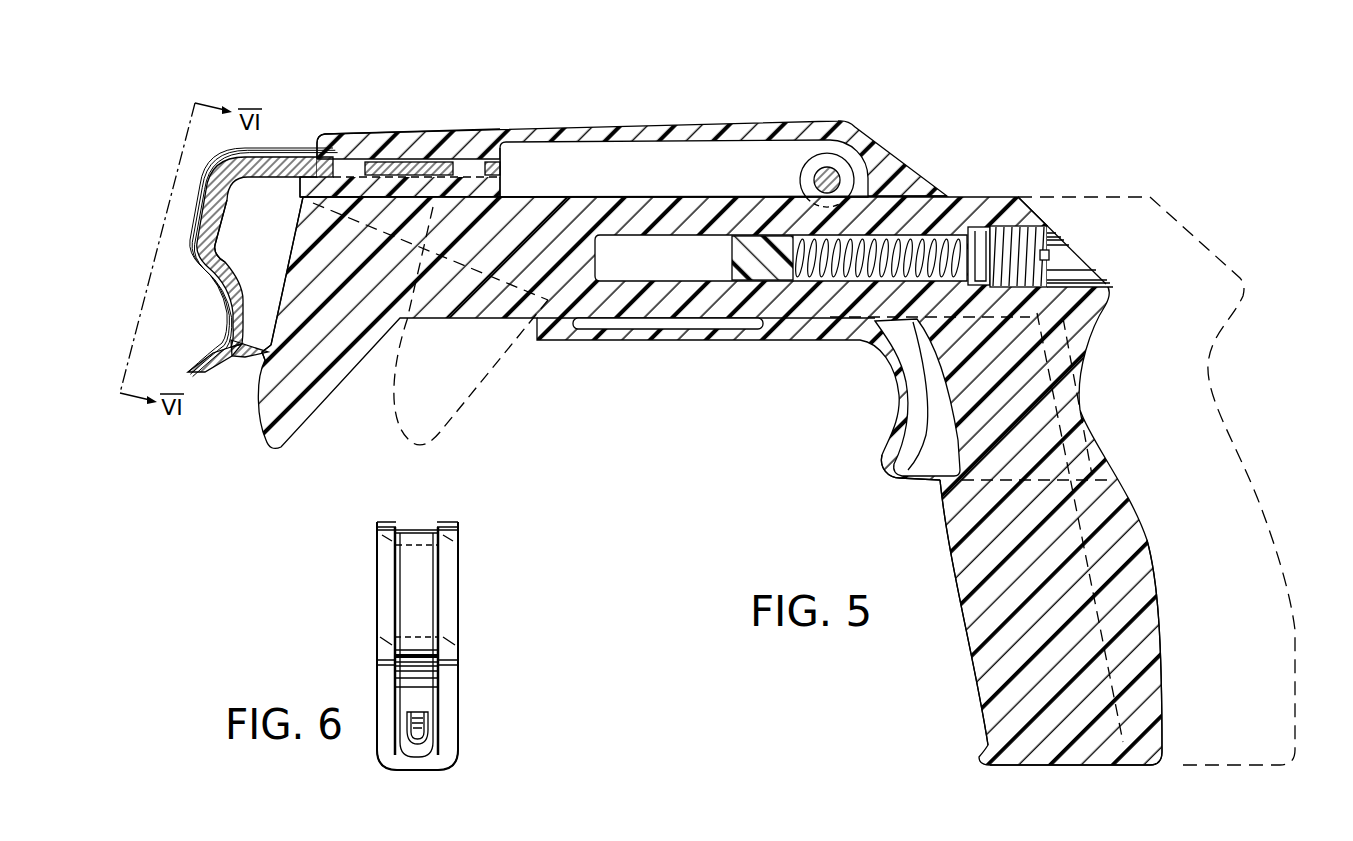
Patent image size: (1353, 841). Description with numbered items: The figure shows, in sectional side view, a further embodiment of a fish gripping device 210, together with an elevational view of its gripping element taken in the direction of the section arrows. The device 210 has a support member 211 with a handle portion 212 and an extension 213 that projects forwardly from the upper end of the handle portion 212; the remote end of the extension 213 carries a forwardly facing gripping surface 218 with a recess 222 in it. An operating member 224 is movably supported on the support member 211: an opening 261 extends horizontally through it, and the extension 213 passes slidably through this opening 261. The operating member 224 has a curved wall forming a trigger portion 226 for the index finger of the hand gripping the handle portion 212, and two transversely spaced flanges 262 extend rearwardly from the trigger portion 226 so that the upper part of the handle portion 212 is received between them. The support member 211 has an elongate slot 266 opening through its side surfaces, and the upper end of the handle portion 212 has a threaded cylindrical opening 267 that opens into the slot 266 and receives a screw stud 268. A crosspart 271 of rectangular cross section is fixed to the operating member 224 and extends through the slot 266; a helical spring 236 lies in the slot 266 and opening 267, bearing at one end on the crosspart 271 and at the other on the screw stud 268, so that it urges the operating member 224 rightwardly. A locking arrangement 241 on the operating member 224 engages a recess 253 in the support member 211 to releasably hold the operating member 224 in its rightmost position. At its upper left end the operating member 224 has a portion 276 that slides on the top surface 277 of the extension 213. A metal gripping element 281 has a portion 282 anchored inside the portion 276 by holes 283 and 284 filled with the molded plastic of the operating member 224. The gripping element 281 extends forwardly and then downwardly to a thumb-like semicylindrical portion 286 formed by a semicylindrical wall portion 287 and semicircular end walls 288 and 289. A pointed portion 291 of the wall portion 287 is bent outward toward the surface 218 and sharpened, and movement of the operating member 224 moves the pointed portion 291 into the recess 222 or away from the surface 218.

In FIG. 5, the fish gripping device 210 is at (648, 355).
In FIG. 5, the support member 211 is at (938, 525).
In FIG. 5, the handle portion 212 is at (993, 653).
In FIG. 5, the extension 213 is at (440, 300).
In FIG. 5, the gripping surface 218 is at (292, 237).
In FIG. 5, the recess 222 is at (258, 365).
In FIG. 5, the operating member 224 is at (592, 128).
In FIG. 5, the trigger portion 226 is at (900, 432).
In FIG. 5, the helical spring 236 is at (847, 262).
In FIG. 5, the locking arrangement 241 is at (815, 155).
In FIG. 5, the recess 253 is at (802, 186).
In FIG. 5, the opening 261 is at (537, 304).
In FIG. 5, the flanges 262 is at (930, 413).
In FIG. 5, the elongate slot 266 is at (636, 274).
In FIG. 5, the threaded cylindrical opening 267 is at (975, 228).
In FIG. 5, the screw stud 268 is at (1025, 228).
In FIG. 5, the crosspart 271 is at (770, 272).
In FIG. 5, the portion 276 is at (390, 134).
In FIG. 5, the top surface 277 is at (550, 193).
In FIG. 5, the gripping element 281 is at (210, 165).
In FIG. 5, the portion 282 is at (373, 163).
In FIG. 5, the hole 283 is at (357, 140).
In FIG. 5, the hole 284 is at (490, 168).
In FIG. 5, the semicylindrical portion 286 is at (197, 320).
In FIG. 6, the semicylindrical portion 286 is at (458, 681).
In FIG. 5, the semicylindrical wall portion 287 is at (238, 285).
In FIG. 6, the semicylindrical wall portion 287 is at (410, 690).
In FIG. 5, the semicircular end wall 288 is at (203, 331).
In FIG. 6, the semicircular end wall 288 is at (390, 730).
In FIG. 6, the semicircular end wall 289 is at (450, 724).
In FIG. 5, the pointed portion 291 is at (243, 352).
In FIG. 6, the pointed portion 291 is at (415, 736).